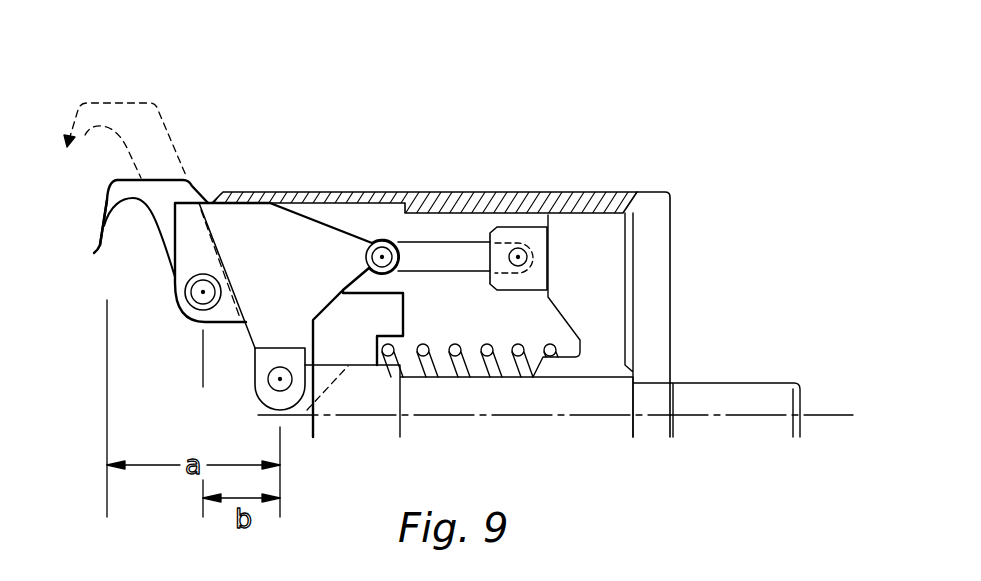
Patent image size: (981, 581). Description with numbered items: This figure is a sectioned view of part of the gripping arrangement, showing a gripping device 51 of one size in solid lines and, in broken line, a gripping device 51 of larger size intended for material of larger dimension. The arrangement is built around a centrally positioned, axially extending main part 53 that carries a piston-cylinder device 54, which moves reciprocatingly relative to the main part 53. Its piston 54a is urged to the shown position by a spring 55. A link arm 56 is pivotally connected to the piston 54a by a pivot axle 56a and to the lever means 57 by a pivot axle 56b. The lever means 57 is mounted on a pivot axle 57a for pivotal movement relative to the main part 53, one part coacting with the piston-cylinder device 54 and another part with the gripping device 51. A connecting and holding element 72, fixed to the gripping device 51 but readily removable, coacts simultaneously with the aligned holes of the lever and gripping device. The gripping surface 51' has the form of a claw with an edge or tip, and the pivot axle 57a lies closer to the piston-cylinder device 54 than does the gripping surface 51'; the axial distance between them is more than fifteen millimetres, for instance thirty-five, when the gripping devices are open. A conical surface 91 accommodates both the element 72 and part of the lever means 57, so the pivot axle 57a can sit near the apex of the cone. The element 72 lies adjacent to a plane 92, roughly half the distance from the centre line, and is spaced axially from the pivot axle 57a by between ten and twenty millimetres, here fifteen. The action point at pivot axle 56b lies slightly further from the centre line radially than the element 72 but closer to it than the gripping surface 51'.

The gripping device 51 is at (136, 146).
The gripping surface 51' is at (87, 242).
The main part 53 is at (738, 416).
The piston-cylinder device 54 is at (598, 240).
The piston 54a is at (611, 291).
The spring 55 is at (492, 343).
The link arm 56 is at (450, 255).
The pivot axle 56a is at (520, 255).
The pivot axle 56b is at (382, 255).
The lever means 57 is at (309, 286).
The pivot axle 57a is at (280, 379).
The connecting and holding element 72 is at (203, 292).
The conical surface 91 is at (237, 297).
The plane 92 is at (210, 200).